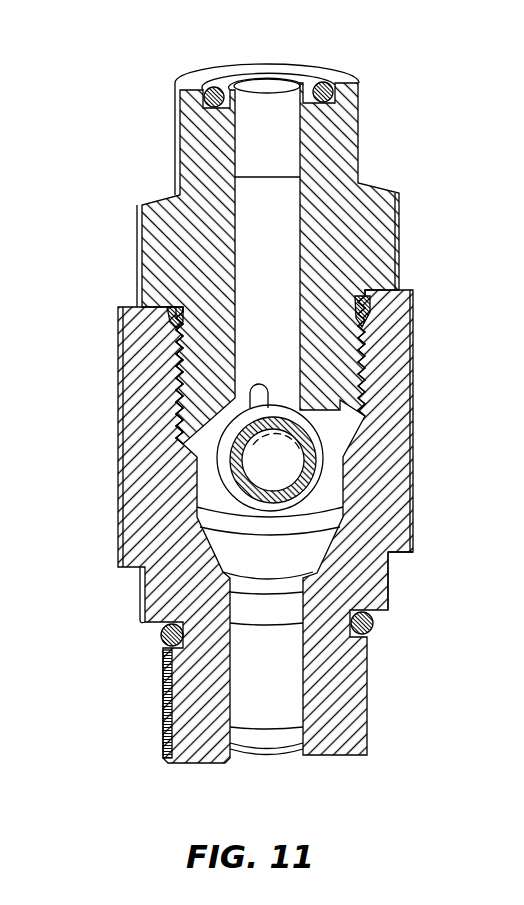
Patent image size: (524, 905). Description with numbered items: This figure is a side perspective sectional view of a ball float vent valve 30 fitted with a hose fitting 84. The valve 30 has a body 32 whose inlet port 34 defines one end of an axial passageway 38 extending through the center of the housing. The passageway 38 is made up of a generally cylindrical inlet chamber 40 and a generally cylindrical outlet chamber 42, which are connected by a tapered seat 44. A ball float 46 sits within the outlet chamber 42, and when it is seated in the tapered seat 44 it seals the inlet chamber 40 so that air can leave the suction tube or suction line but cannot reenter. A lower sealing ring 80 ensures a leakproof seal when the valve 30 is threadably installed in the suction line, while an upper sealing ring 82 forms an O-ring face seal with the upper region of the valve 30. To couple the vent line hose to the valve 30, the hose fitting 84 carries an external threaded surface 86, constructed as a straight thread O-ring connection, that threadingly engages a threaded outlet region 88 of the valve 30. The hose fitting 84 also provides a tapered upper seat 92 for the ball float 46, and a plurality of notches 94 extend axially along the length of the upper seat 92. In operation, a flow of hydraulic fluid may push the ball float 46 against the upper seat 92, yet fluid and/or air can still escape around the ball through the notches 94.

The ball float vent valve 30 is at (285, 547).
The body 32 is at (411, 553).
The inlet port 34 is at (303, 753).
The axial passageway 38 is at (242, 667).
The inlet chamber 40 is at (290, 688).
The outlet chamber 42 is at (210, 485).
The tapered seat 44 is at (232, 553).
The ball float 46 is at (273, 467).
The lower sealing ring 80 is at (375, 626).
The upper sealing ring 82 is at (212, 88).
The hose fitting 84 is at (462, 106).
The external threaded surface 86 is at (365, 374).
The threaded outlet region 88 is at (177, 355).
The tapered upper seat 92 is at (322, 418).
The notches 94 is at (257, 383).